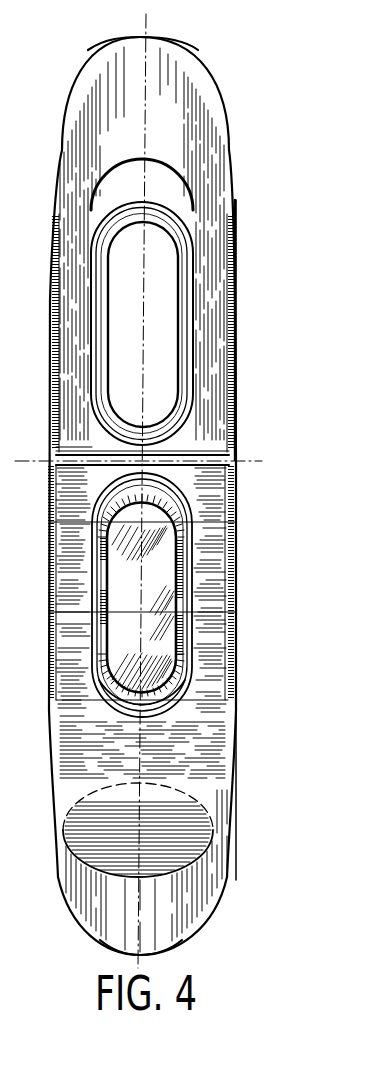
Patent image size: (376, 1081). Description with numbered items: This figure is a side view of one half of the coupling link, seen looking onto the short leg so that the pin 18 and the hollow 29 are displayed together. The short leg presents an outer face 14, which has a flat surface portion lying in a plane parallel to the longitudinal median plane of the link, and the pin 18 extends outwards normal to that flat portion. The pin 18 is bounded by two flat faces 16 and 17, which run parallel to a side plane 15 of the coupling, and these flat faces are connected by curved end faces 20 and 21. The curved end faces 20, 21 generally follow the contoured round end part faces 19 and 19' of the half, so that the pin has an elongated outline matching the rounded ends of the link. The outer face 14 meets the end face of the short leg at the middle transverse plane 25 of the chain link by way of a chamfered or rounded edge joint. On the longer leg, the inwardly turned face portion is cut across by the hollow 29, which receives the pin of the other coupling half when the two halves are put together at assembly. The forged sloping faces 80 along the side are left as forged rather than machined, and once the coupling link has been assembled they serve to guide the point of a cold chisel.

The outer face 14 is at (92, 766).
The side plane 15 is at (143, 766).
The flat face 16 is at (100, 563).
The flat face 17 is at (184, 640).
The pin 18 is at (125, 588).
The contoured round end part face 19 is at (129, 30).
The contoured round end part face 19' is at (111, 954).
The curved end face 20 is at (160, 485).
The curved end face 21 is at (127, 710).
The middle transverse plane 25 is at (262, 456).
The hollow 29 is at (133, 228).
The forged sloping face 80 is at (236, 306).